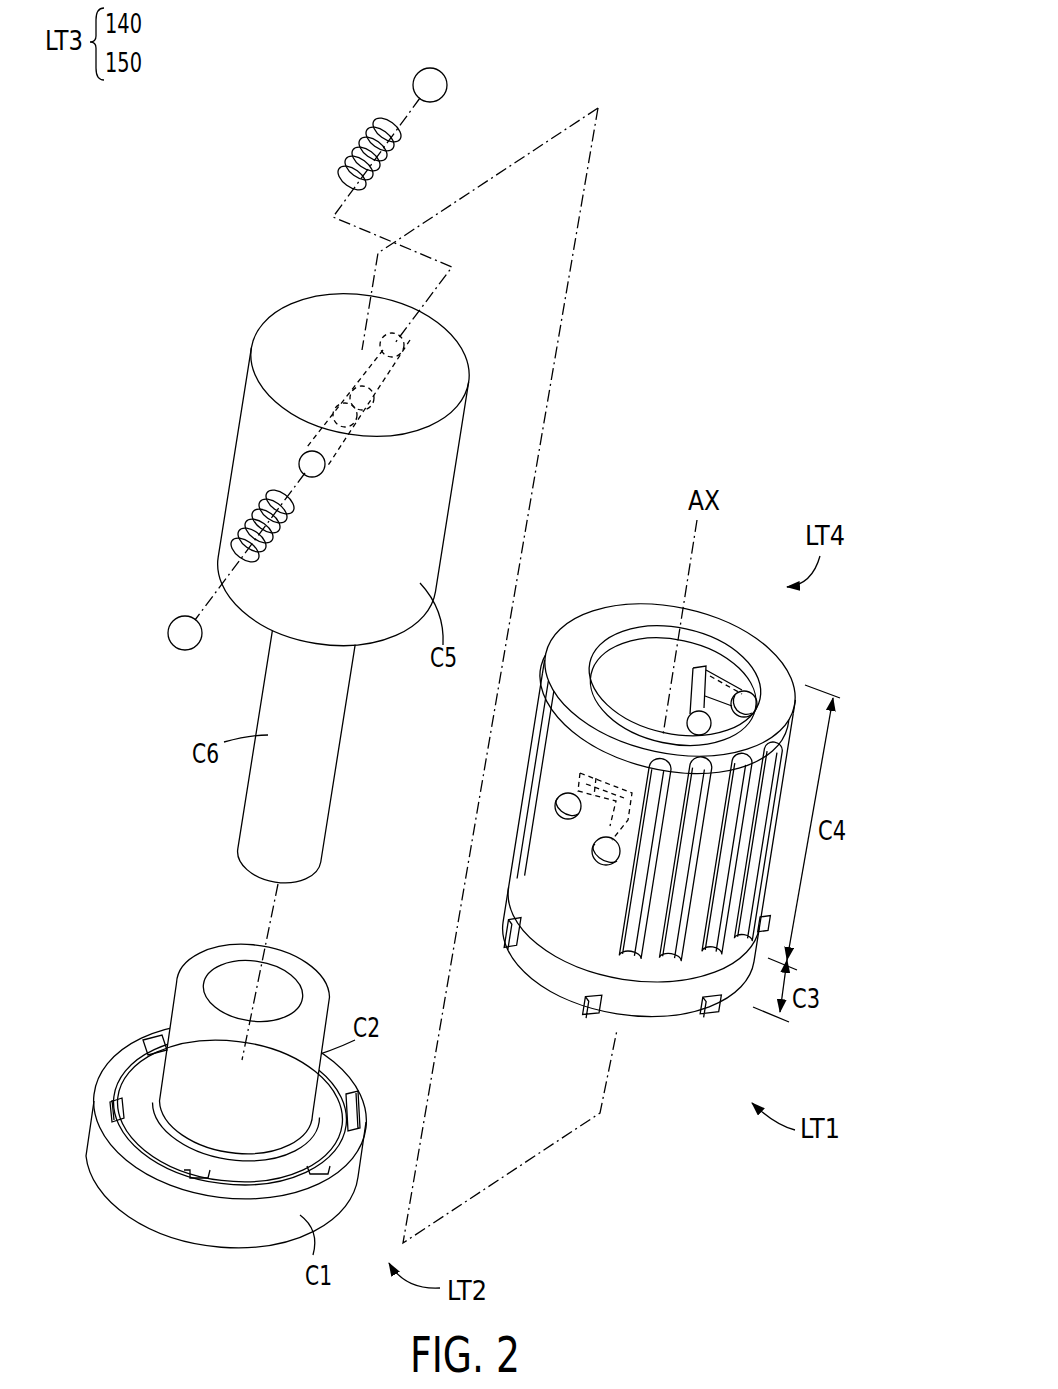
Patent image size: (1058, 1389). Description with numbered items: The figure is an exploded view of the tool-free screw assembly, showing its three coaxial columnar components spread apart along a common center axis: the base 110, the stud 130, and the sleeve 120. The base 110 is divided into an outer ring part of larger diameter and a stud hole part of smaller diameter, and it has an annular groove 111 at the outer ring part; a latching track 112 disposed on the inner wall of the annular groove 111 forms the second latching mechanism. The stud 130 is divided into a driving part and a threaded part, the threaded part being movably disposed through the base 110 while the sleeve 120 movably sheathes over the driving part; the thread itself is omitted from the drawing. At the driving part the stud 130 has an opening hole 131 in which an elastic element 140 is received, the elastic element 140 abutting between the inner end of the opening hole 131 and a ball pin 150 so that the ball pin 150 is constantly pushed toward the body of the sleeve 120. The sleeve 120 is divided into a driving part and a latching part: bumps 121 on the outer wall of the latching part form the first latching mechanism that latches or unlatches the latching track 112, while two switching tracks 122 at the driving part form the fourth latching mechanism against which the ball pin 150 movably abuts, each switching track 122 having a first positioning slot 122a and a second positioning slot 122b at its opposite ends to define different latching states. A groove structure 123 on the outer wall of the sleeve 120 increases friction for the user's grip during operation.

The base 110 is at (104, 1214).
The annular groove 111 is at (243, 1178).
The latching track 112 is at (315, 1168).
The sleeve 120 is at (849, 774).
The bump 121 is at (589, 1018).
The switching track 122 is at (604, 774).
The first positioning slot 122a is at (685, 716).
The second positioning slot 122b is at (741, 697).
The groove structure 123 is at (643, 956).
The stud 130 is at (255, 308).
The opening hole 131 is at (401, 347).
The elastic element 140 is at (362, 150).
The ball pin 150 is at (423, 85).